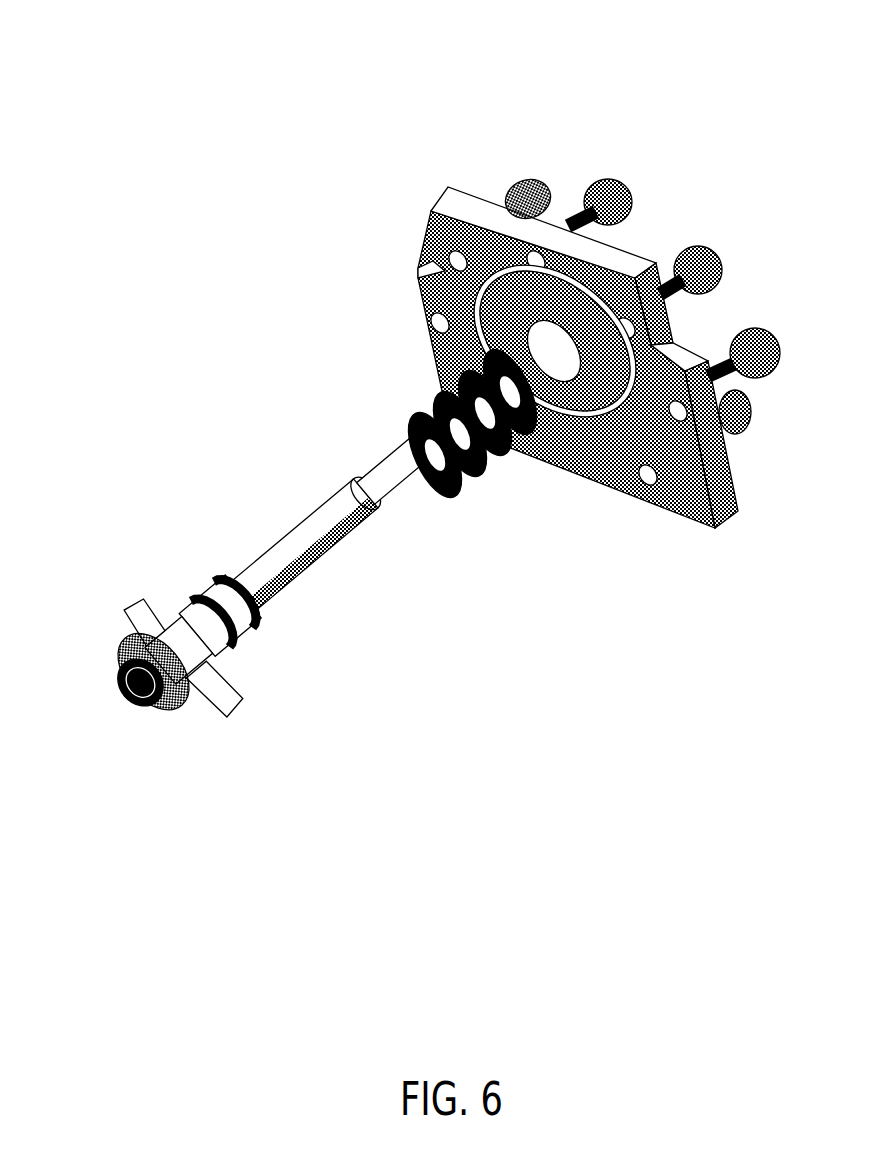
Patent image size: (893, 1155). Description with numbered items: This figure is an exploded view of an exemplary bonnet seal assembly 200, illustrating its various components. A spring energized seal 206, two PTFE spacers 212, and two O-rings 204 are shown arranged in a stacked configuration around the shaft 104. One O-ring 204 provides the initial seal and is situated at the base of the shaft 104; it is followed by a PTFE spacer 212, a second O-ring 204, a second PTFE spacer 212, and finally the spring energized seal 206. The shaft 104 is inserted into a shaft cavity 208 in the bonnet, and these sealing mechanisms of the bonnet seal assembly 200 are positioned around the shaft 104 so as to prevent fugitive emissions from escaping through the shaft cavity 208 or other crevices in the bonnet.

The bonnet seal assembly 200 is at (70, 92).
The shaft 104 is at (313, 567).
The O-rings 204 is at (430, 383).
The spring energized seal 206 is at (412, 270).
The shaft cavity 208 is at (546, 318).
The PTFE spacers 212 is at (500, 412).